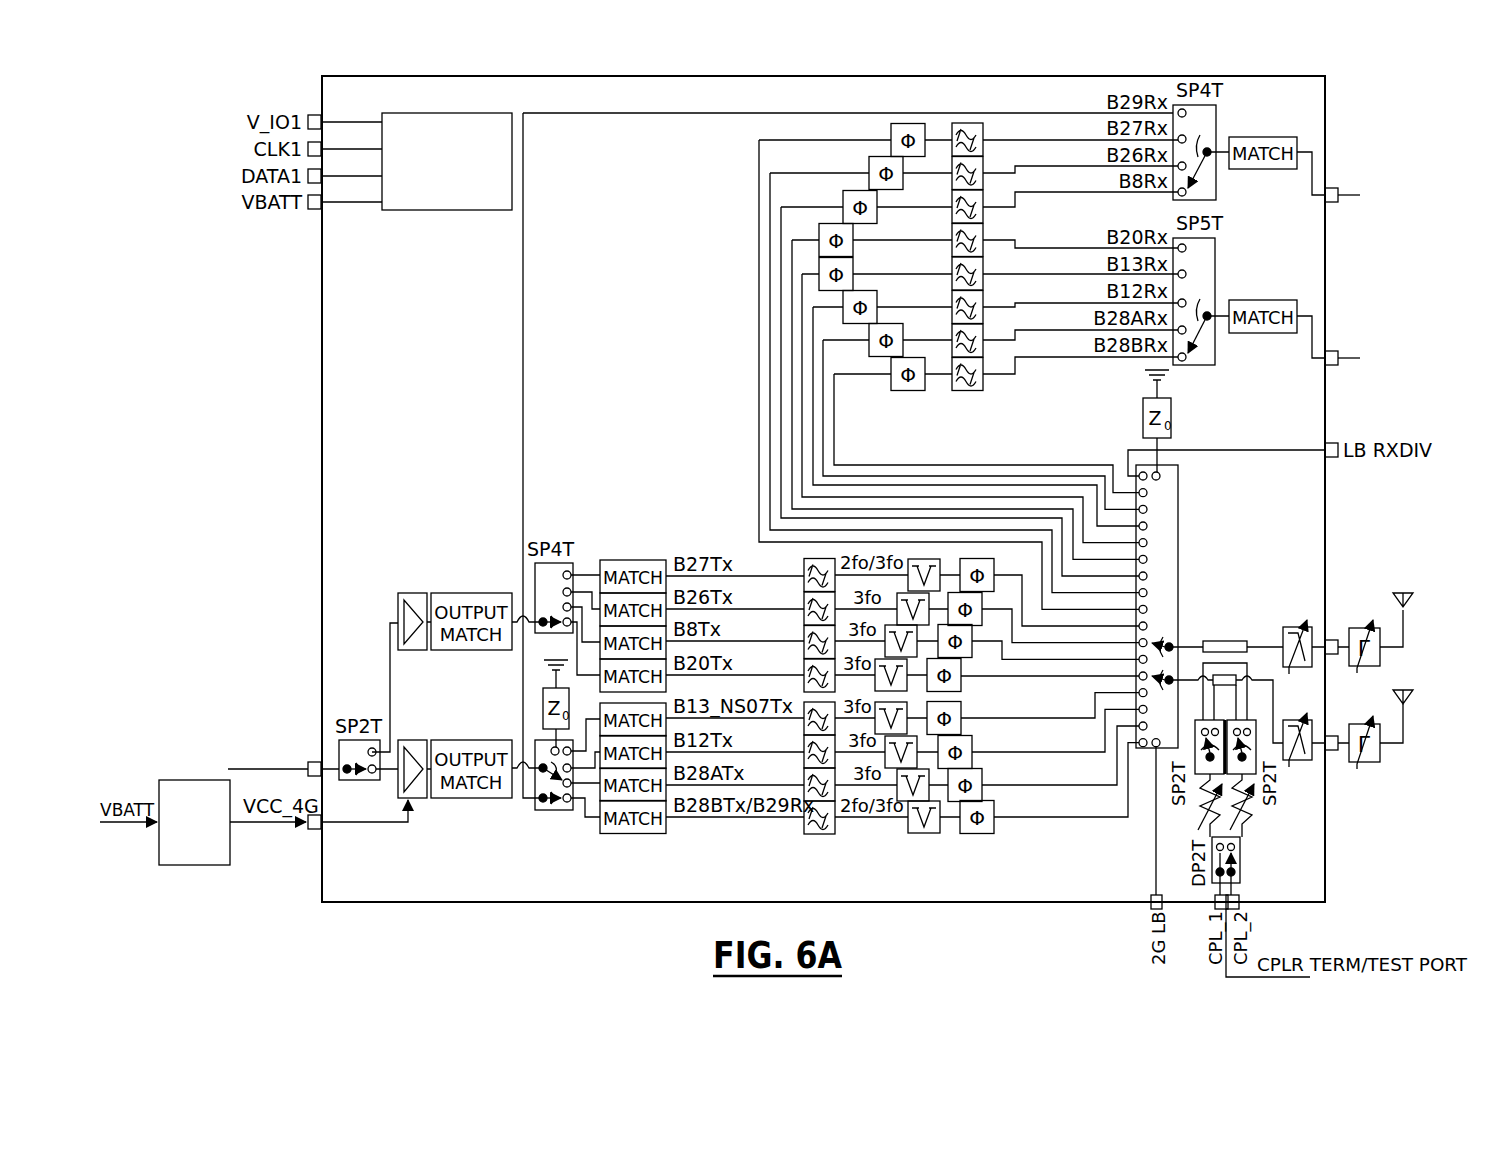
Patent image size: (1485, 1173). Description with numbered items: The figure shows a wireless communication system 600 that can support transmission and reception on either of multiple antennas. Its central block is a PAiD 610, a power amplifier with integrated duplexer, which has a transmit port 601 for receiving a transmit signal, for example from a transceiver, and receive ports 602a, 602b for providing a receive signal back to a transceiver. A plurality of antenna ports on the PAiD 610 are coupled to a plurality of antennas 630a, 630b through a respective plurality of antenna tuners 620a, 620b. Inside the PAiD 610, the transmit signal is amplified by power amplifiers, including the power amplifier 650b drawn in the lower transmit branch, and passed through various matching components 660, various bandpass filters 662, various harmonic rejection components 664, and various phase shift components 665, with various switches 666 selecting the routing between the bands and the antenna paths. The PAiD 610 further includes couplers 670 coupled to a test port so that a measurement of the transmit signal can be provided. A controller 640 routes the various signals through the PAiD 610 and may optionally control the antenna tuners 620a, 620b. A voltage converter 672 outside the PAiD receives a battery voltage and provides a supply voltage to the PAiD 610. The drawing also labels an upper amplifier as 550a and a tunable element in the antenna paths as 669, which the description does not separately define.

The wireless communication system 600 is at (1340, 133).
The transmit port 601 is at (290, 766).
The receive port 602a is at (1342, 203).
The receive port 602b is at (1342, 366).
The PAiD 610 is at (1327, 274).
The antenna tuner 620a is at (1353, 625).
The antenna tuner 620b is at (1352, 764).
The antenna 630a is at (1397, 594).
The antenna 630b is at (1397, 690).
The controller 640 is at (428, 210).
The power amplifier 550a is at (397, 612).
The power amplifier 650b is at (418, 800).
The matching components 660 is at (646, 842).
The bandpass filters 662 is at (816, 842).
The harmonic rejection components 664 is at (911, 842).
The phase shift components 665 is at (976, 842).
The switches 666 is at (1192, 515).
The tunable attenuator 669 is at (1297, 622).
The couplers 670 is at (1236, 638).
The voltage converter 672 is at (195, 865).